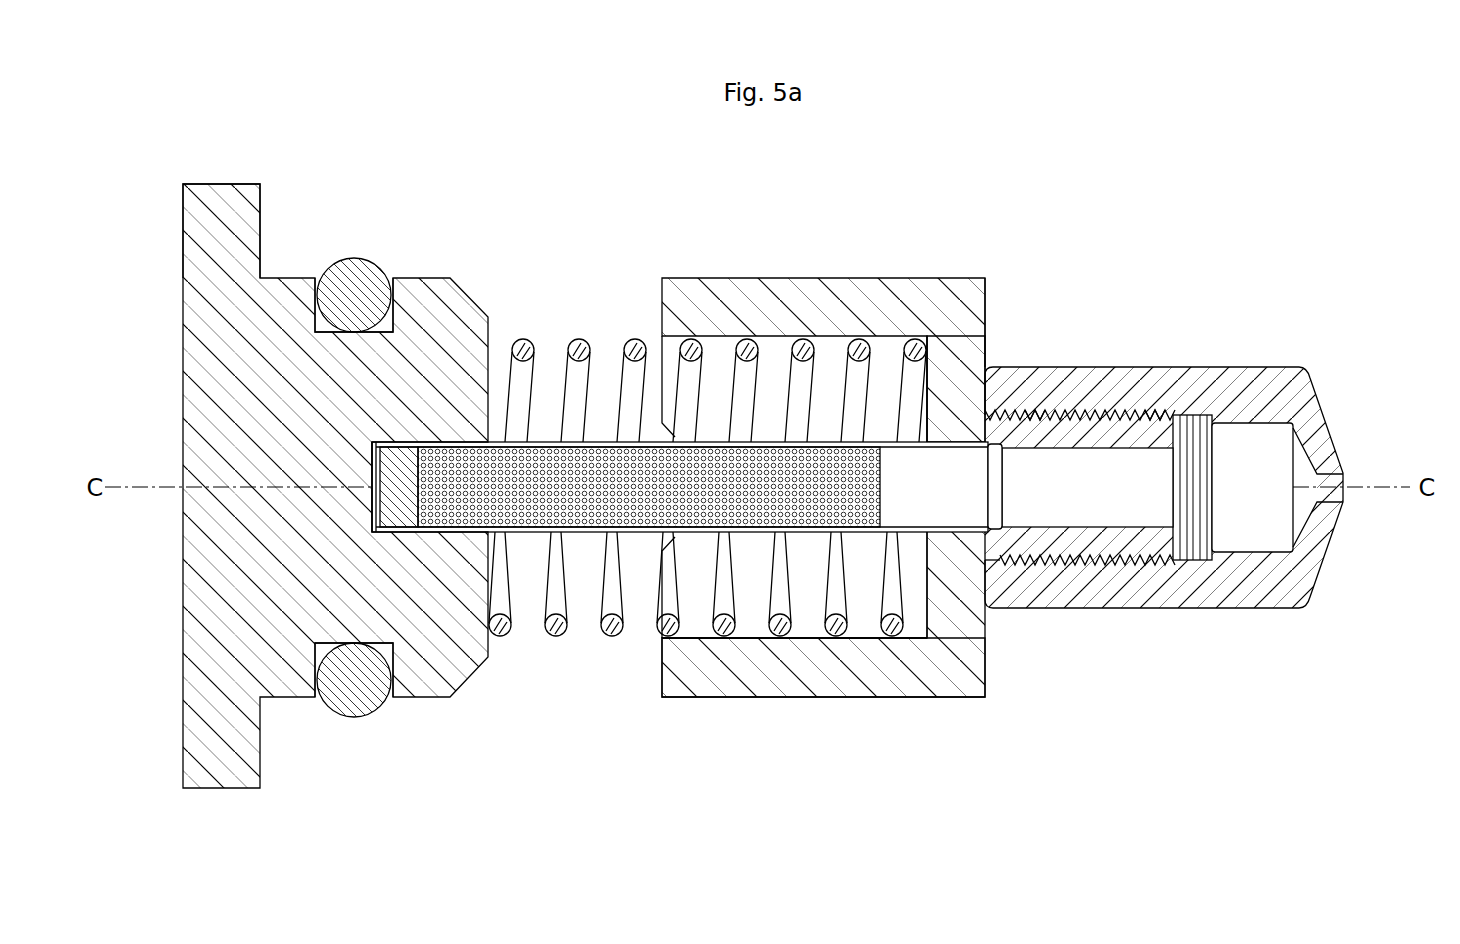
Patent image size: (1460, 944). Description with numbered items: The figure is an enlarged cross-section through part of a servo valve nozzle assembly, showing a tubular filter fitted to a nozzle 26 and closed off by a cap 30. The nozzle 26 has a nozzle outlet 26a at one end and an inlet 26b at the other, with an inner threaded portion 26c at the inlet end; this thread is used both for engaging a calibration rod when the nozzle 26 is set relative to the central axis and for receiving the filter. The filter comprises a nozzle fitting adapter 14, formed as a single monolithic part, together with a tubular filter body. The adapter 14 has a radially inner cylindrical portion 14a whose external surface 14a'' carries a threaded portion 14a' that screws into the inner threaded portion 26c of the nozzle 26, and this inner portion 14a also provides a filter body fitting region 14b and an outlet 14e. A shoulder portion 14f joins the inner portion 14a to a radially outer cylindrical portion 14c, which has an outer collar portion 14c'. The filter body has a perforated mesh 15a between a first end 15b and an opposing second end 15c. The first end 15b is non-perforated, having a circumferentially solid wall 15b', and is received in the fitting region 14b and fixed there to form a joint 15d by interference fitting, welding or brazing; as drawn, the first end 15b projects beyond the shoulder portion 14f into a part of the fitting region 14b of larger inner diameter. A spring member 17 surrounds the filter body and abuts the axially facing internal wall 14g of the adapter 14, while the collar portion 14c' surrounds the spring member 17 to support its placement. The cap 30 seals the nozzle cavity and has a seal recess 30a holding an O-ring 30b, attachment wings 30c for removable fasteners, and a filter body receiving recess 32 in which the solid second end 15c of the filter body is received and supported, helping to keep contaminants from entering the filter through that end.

The nozzle fitting adapter 14 is at (697, 262).
The radially inner cylindrical portion 14a is at (1079, 415).
The threaded portion 14a' is at (1170, 354).
The external surface 14a'' is at (1035, 364).
The filter body fitting region 14b is at (943, 450).
The radially outer cylindrical portion 14c is at (823, 719).
The outer collar portion 14c' is at (794, 711).
The outlet 14e is at (1228, 407).
The shoulder portion 14f is at (962, 342).
The axially facing internal wall 14g is at (922, 407).
The mesh 15a is at (590, 500).
The first end 15b is at (1087, 548).
The circumferentially solid wall 15b' is at (1021, 555).
The second end 15c is at (400, 455).
The joint 15d is at (958, 535).
The spring member 17 is at (572, 343).
The nozzle 26 is at (1267, 620).
The nozzle outlet 26a is at (1337, 495).
The inlet 26b is at (1272, 440).
The inner threaded portion 26c is at (1118, 415).
The cap 30 is at (255, 408).
The seal recess 30a is at (330, 658).
The O-ring 30b is at (358, 677).
The attachment wings 30c is at (218, 233).
The filter body receiving recess 32 is at (372, 518).